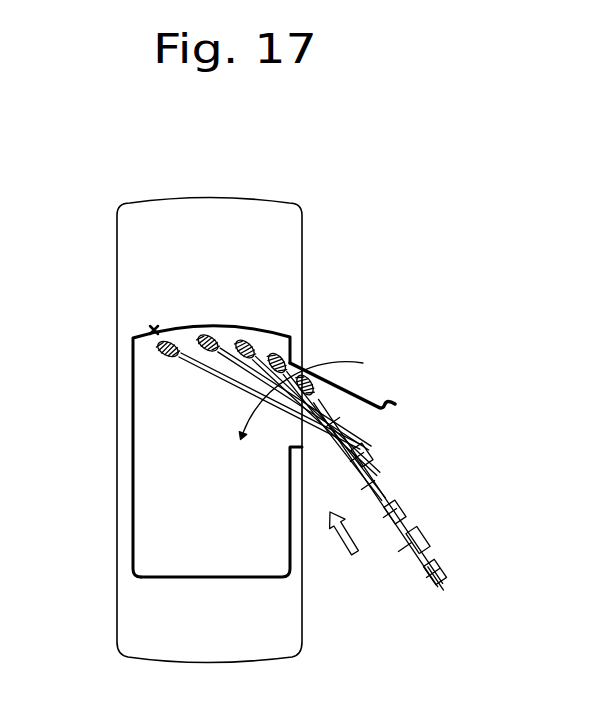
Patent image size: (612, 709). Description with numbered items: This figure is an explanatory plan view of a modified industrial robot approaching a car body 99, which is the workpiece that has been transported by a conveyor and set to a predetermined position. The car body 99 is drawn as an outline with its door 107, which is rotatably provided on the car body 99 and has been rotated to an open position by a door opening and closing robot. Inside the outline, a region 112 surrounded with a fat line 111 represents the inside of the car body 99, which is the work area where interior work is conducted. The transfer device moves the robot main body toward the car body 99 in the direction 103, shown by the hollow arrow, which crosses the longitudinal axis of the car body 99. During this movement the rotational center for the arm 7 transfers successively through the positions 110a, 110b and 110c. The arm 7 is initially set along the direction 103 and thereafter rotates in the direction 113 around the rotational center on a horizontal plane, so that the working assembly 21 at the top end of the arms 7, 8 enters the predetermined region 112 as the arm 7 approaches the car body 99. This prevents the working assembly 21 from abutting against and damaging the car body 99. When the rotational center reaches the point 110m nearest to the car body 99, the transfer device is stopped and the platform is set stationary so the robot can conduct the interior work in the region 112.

The working assembly 21 is at (154, 328).
The arm 8 is at (158, 352).
The arm 7 is at (219, 369).
The fat line 111 is at (132, 428).
The region 112 is at (200, 495).
The car body 99 is at (147, 620).
The direction 113 is at (342, 360).
The door 107 is at (352, 385).
The point 110m is at (348, 418).
The rotational center position 110c is at (398, 505).
The rotational center position 110b is at (412, 537).
The rotational center position 110a is at (437, 566).
The direction 103 is at (343, 557).